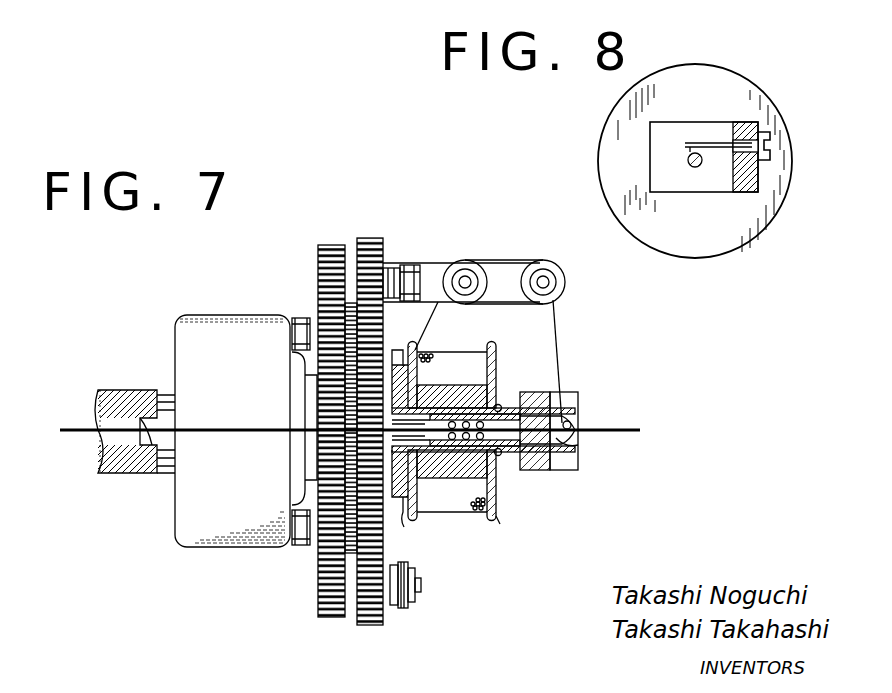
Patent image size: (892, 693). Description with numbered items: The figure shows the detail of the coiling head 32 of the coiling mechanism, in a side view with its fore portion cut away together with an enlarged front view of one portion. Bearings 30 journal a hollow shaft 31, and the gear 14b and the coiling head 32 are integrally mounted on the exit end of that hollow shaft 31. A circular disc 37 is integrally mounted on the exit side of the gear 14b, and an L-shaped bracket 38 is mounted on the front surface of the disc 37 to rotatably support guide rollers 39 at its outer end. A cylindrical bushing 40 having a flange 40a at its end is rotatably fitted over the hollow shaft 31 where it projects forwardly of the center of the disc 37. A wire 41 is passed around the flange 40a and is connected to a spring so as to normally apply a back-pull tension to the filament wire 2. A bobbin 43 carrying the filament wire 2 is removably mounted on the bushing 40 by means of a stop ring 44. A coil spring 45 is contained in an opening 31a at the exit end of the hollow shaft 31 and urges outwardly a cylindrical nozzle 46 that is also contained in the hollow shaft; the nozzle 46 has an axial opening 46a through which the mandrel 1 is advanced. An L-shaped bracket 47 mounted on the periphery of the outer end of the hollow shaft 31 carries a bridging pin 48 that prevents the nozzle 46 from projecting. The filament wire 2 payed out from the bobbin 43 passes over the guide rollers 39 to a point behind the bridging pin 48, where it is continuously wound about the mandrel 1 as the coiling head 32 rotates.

In FIG. 7, the mandrel 1 is at (76, 430).
In FIG. 8, the mandrel 1 is at (702, 163).
In FIG. 7, the filament wire 2 is at (428, 332).
In FIG. 8, the filament wire 2 is at (688, 152).
In FIG. 7, the gear 14b is at (320, 600).
In FIG. 7, the bearings 30 is at (231, 398).
In FIG. 7, the hollow shaft 31 is at (123, 394).
In FIG. 7, the opening 31a is at (452, 481).
In FIG. 7, the coiling head 32 is at (366, 238).
In FIG. 7, the circular disc 37 is at (373, 625).
In FIG. 7, the L-shaped bracket 38 is at (420, 264).
In FIG. 7, the guide rollers 39 is at (516, 256).
In FIG. 7, the cylindrical bushing 40 is at (458, 386).
In FIG. 7, the flange 40a is at (408, 512).
In FIG. 7, the wire 41 is at (400, 553).
In FIG. 7, the bobbin 43 is at (500, 524).
In FIG. 8, the bobbin 43 is at (622, 116).
In FIG. 7, the stop ring 44 is at (499, 404).
In FIG. 7, the coil spring 45 is at (499, 457).
In FIG. 7, the cylindrical nozzle 46 is at (554, 470).
In FIG. 7, the axial opening 46a is at (578, 445).
In FIG. 7, the L-shaped bracket 47 is at (540, 400).
In FIG. 8, the L-shaped bracket 47 is at (758, 122).
In FIG. 7, the bridging pin 48 is at (572, 424).
In FIG. 8, the bridging pin 48 is at (712, 142).